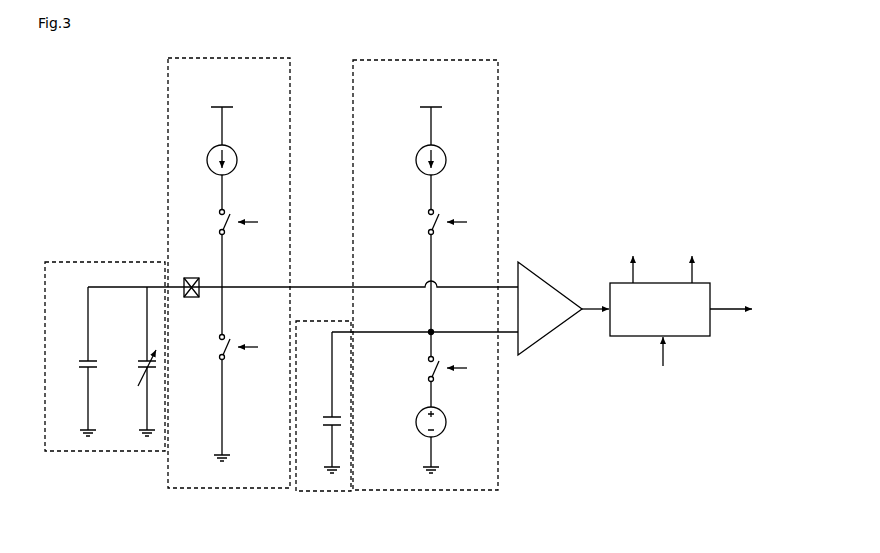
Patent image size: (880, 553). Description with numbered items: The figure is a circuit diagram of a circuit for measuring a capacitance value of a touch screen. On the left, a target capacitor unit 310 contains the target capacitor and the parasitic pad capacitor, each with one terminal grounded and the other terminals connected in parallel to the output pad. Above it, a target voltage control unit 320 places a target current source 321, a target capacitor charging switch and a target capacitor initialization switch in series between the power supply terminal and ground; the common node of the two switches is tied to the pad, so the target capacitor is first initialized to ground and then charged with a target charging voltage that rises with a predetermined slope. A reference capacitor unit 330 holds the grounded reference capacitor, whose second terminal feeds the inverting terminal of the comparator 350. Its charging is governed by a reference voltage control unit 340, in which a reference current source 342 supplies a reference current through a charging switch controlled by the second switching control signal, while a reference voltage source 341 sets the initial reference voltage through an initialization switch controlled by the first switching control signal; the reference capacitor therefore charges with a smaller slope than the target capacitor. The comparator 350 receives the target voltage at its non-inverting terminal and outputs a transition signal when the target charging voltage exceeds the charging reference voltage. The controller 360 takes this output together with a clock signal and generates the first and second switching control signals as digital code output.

The target capacitor unit 310 is at (103, 451).
The target voltage control unit 320 is at (229, 299).
The target current source 321 is at (213, 150).
The reference capacitor unit 330 is at (318, 491).
The reference voltage control unit 340 is at (425, 300).
The reference voltage source 341 is at (443, 432).
The reference current source 342 is at (422, 150).
The comparator 350 is at (544, 281).
The controller 360 is at (623, 336).